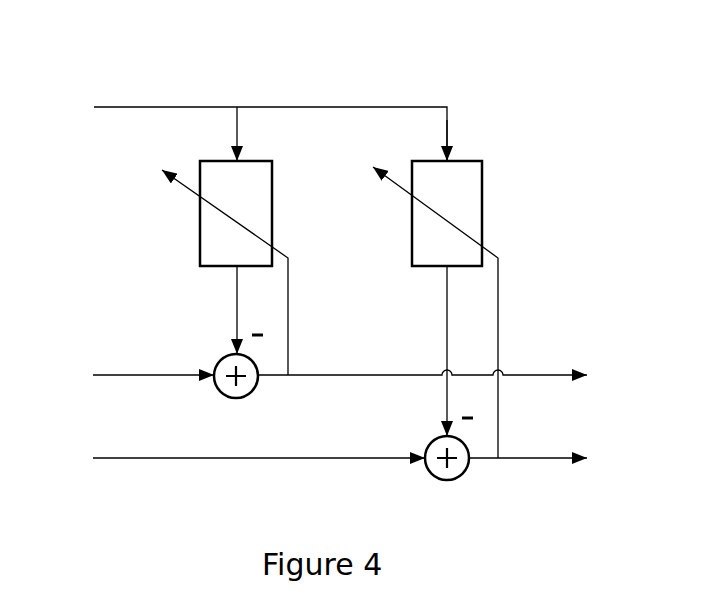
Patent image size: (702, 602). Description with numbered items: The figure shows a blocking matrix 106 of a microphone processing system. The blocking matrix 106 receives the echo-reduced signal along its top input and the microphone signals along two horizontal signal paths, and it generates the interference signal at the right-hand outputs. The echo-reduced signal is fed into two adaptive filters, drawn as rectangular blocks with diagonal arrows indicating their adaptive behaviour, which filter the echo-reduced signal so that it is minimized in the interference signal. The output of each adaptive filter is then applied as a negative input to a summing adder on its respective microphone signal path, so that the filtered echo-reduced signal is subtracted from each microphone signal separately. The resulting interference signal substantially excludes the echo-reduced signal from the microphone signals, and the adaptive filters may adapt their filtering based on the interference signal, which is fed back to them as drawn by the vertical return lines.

The blocking matrix 106 is at (518, 55).